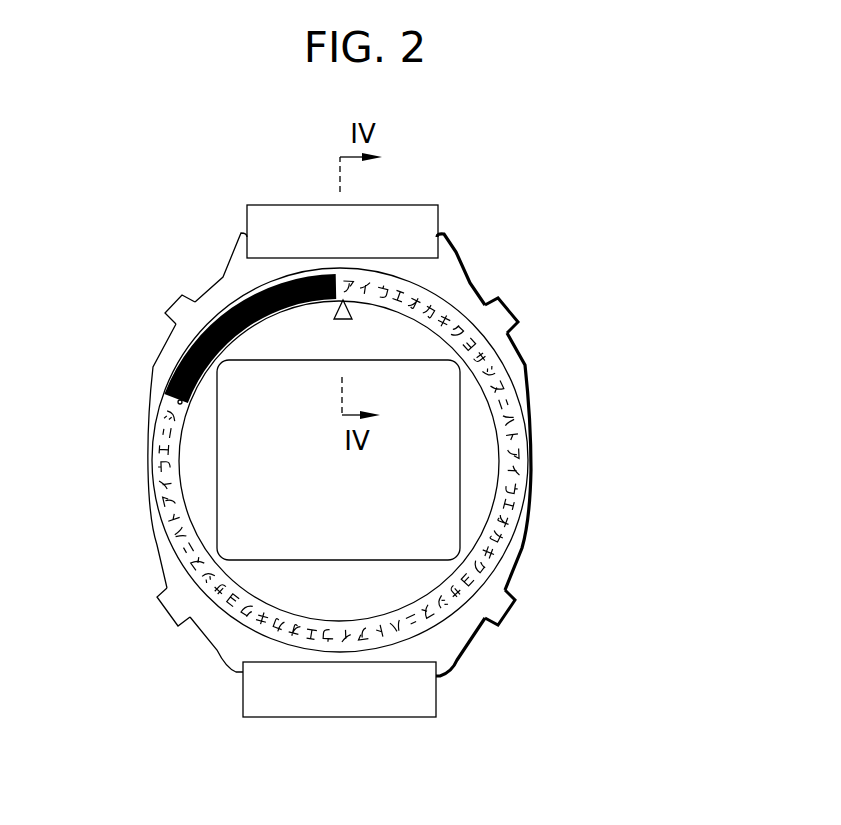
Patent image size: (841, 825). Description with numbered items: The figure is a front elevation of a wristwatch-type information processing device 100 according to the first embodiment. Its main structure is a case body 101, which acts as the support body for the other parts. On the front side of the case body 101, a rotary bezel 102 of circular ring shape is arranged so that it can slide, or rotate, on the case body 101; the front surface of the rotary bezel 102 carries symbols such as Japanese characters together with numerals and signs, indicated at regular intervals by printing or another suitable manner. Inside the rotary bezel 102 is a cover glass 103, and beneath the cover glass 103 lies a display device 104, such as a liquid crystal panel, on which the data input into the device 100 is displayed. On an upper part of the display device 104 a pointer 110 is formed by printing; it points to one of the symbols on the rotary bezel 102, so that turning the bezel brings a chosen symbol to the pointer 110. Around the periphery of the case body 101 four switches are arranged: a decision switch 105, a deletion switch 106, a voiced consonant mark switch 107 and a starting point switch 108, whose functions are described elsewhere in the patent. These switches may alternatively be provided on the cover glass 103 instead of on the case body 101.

The wristwatch-type information processing device 100 is at (578, 467).
The case body 101 is at (466, 276).
The rotary bezel 102 is at (480, 580).
The cover glass 103 is at (477, 433).
The display device 104 is at (438, 497).
The decision switch 105 is at (505, 318).
The deletion switch 106 is at (503, 620).
The voiced consonant mark switch 107 is at (182, 298).
The starting point switch 108 is at (165, 613).
The pointer 110 is at (352, 318).